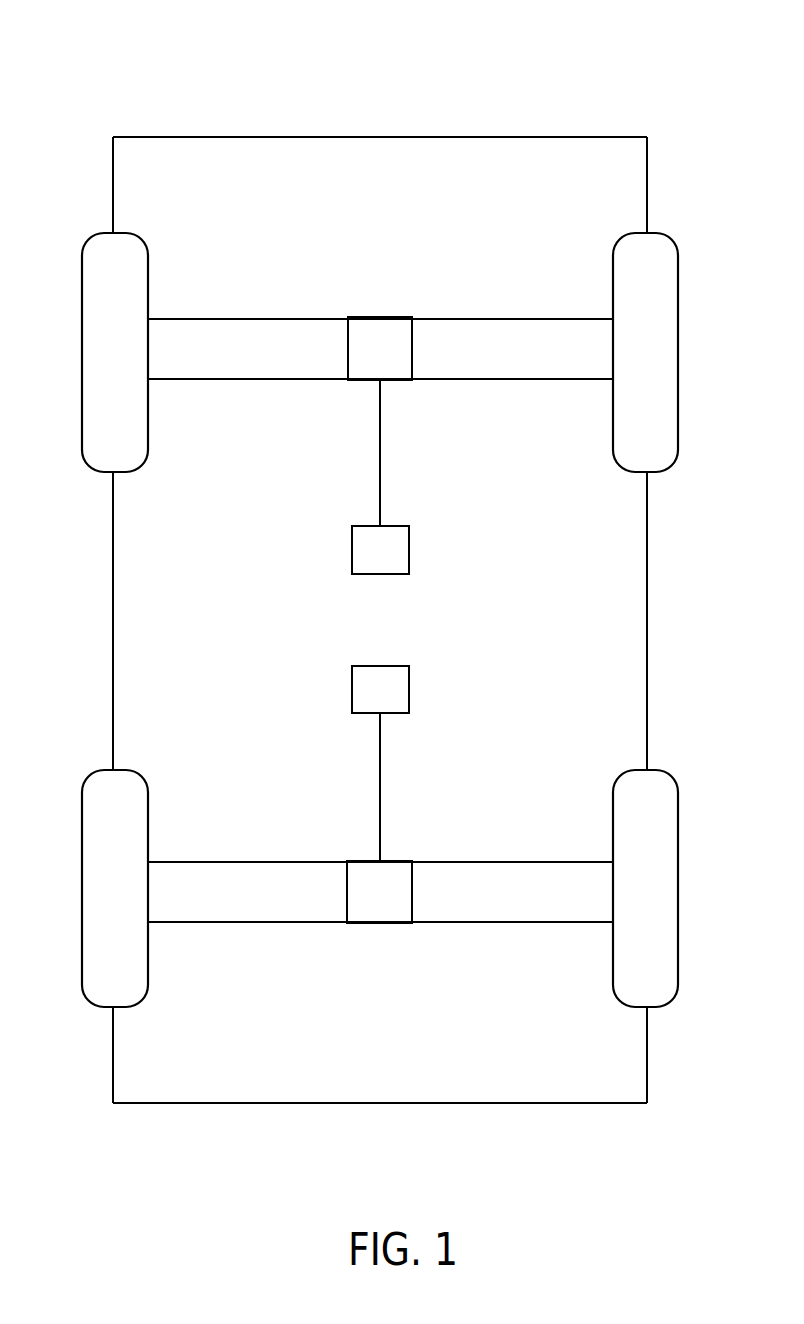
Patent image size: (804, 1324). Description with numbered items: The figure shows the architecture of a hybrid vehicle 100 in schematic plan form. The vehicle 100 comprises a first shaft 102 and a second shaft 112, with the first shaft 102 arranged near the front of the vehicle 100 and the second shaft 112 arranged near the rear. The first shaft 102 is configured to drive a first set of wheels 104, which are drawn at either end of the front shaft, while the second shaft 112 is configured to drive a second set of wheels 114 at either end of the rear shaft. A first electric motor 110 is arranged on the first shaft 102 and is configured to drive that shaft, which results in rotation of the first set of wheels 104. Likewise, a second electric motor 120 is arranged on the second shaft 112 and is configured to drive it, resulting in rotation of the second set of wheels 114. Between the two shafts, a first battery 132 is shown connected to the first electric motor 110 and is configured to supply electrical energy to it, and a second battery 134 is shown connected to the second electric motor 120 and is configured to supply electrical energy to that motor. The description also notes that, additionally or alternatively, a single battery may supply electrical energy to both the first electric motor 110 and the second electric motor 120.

The vehicle 100 is at (686, 37).
The first shaft 102 is at (524, 318).
The first set of wheels 104 is at (90, 246).
The first electric motor 110 is at (363, 359).
The second shaft 112 is at (532, 862).
The second set of wheels 114 is at (92, 775).
The second electric motor 120 is at (363, 903).
The first battery 132 is at (363, 561).
The second battery 134 is at (363, 700).